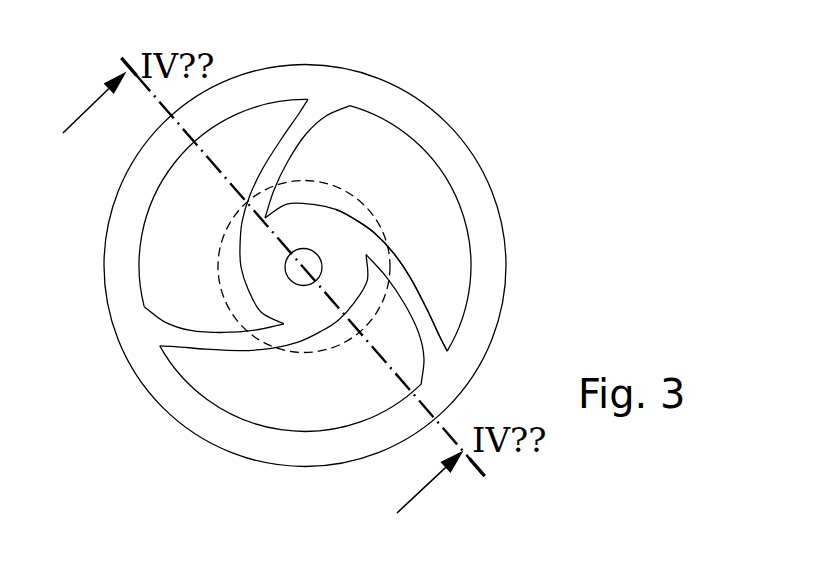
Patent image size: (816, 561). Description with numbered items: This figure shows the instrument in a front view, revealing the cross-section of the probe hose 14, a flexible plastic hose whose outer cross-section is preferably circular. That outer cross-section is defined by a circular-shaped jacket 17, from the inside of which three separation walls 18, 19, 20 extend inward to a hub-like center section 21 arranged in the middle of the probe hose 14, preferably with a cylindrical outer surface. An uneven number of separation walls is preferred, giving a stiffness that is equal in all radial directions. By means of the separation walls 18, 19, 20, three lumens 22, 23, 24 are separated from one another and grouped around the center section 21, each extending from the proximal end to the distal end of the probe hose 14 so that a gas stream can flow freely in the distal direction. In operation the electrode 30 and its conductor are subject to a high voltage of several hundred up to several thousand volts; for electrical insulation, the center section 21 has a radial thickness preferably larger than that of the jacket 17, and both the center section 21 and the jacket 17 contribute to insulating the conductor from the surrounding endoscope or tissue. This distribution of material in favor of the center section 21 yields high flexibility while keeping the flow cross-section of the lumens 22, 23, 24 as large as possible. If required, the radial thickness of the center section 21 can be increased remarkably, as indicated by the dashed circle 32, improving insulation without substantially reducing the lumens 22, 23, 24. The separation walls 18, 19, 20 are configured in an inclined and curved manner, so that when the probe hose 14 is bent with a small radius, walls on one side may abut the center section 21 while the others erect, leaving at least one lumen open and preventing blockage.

The probe hose 14 is at (486, 95).
The jacket 17 is at (473, 187).
The separation wall 18 is at (281, 137).
The separation wall 19 is at (238, 350).
The separation wall 20 is at (410, 285).
The center section 21 is at (335, 228).
The lumen 22 is at (213, 224).
The lumen 23 is at (347, 401).
The lumen 24 is at (421, 199).
The electrode 30 is at (286, 274).
The dashed circle 32 is at (204, 285).